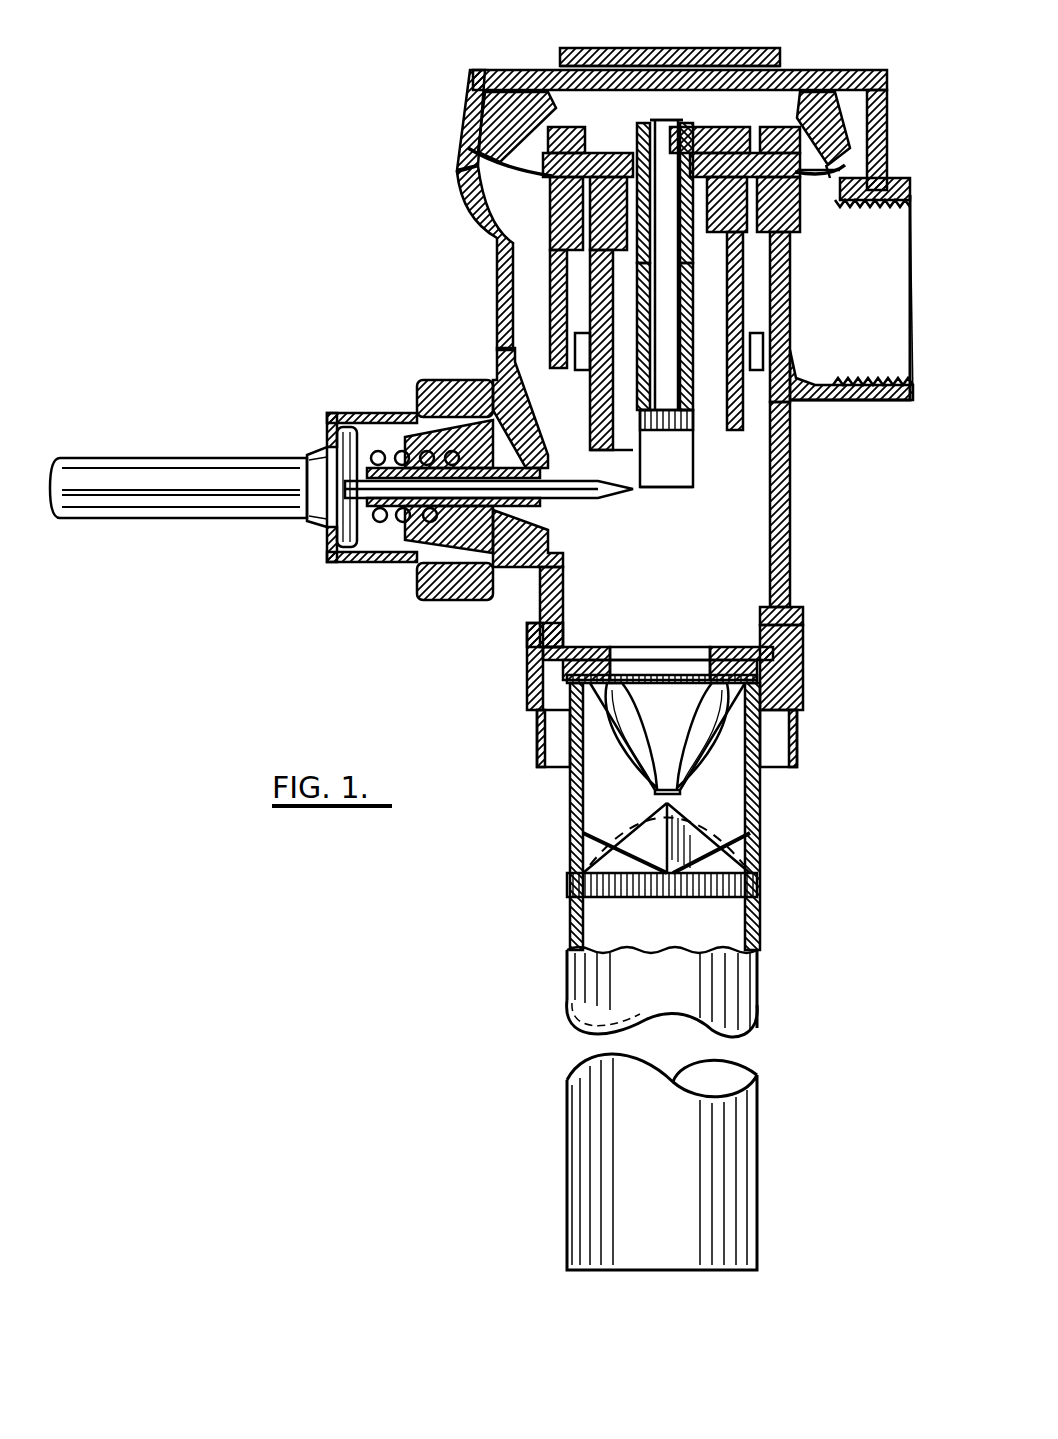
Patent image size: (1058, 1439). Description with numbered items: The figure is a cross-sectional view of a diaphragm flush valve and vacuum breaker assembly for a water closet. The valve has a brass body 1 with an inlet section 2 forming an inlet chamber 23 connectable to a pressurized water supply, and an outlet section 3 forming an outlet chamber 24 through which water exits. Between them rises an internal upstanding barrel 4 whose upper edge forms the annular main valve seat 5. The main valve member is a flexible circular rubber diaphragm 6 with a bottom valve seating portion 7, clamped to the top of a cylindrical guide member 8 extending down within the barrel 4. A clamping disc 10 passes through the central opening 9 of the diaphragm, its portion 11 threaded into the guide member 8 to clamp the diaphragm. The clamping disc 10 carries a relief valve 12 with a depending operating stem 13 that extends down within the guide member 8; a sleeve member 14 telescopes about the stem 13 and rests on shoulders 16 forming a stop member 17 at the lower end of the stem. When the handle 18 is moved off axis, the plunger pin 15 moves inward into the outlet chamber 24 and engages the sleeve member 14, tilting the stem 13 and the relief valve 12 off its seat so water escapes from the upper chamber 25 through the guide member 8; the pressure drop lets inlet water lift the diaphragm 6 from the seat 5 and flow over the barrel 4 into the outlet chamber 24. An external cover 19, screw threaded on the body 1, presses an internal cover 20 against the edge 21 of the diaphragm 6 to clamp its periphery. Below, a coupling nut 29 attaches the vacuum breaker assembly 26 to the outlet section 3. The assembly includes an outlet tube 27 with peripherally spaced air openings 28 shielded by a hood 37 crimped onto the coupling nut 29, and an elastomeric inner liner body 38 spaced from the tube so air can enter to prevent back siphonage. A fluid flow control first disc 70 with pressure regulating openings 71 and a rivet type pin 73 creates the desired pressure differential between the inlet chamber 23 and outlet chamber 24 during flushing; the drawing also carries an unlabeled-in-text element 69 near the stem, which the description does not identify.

The brass body 1 is at (805, 540).
The inlet section 2 is at (827, 165).
The outlet section 3 is at (765, 615).
The internal upstanding barrel 4 is at (795, 338).
The annular main valve seat 5 is at (816, 190).
The flexible circular rubber diaphragm 6 is at (825, 232).
The bottom valve seating portion 7 is at (792, 258).
The cylindrical guide member 8 is at (745, 423).
The central opening 9 is at (700, 150).
The clamping disc 10 is at (557, 128).
The threaded portion 11 is at (605, 195).
The relief valve 12 is at (630, 118).
The operating stem 13 is at (660, 340).
The sleeve member 14 is at (705, 366).
The plunger pin 15 is at (575, 468).
The shoulders 16 is at (695, 425).
The stop member 17 is at (663, 440).
The handle 18 is at (203, 450).
The external cover 19 is at (467, 113).
The internal cover 20 is at (640, 47).
The edge of the diaphragm 21 is at (470, 150).
The inlet chamber 23 is at (893, 313).
The outlet chamber 24 is at (688, 589).
The upper chamber 25 is at (681, 123).
The vacuum breaker assembly 26 is at (545, 830).
The outlet tube 27 is at (565, 963).
The air openings 28 is at (543, 742).
The coupling nut 29 is at (812, 672).
The hood 37 is at (793, 750).
The body of the vacuum breaker inner liner 38 is at (762, 746).
The piston tube wall 69 is at (705, 225).
The first disc 70 is at (758, 307).
The pressure regulating openings 71 is at (790, 315).
The rivet type pin 73 is at (688, 488).